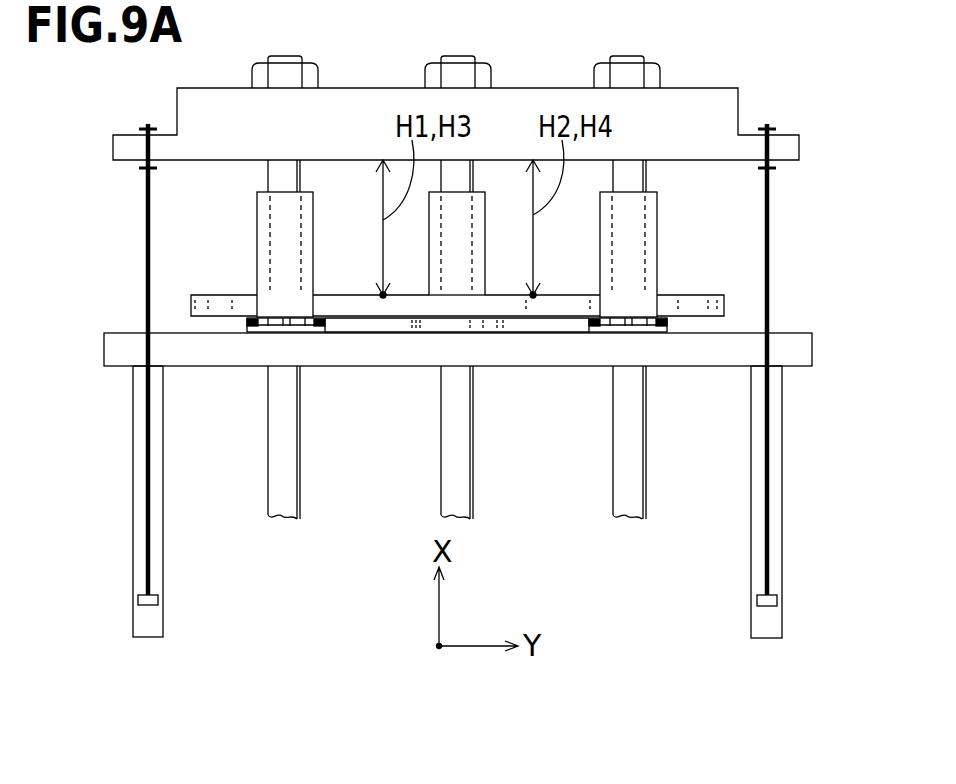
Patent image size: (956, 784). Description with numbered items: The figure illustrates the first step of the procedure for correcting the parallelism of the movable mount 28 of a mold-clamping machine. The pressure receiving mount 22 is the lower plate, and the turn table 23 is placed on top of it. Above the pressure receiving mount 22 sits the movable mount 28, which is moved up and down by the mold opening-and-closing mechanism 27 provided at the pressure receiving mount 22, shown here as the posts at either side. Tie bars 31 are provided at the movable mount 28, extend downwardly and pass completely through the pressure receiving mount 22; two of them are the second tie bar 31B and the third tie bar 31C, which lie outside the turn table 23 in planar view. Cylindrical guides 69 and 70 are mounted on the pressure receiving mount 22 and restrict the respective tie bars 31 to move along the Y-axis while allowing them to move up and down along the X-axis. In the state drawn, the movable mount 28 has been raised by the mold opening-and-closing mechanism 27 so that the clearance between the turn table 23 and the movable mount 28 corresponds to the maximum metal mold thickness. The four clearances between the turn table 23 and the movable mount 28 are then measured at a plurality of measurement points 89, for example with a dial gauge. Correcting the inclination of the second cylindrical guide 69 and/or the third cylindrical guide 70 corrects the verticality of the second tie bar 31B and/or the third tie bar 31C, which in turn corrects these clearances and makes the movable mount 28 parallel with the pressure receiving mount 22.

The pressure receiving mount 22 is at (802, 348).
The turn table 23 is at (724, 303).
The mold opening-and-closing mechanism 27 is at (133, 485).
The movable mount 28 is at (350, 98).
The tie bars 31 is at (465, 339).
The second tie bar 31B is at (244, 339).
The third tie bar 31C is at (677, 339).
The second cylindrical guide 69 is at (257, 252).
The third cylindrical guide 70 is at (657, 247).
The measurement points 89 is at (383, 295).